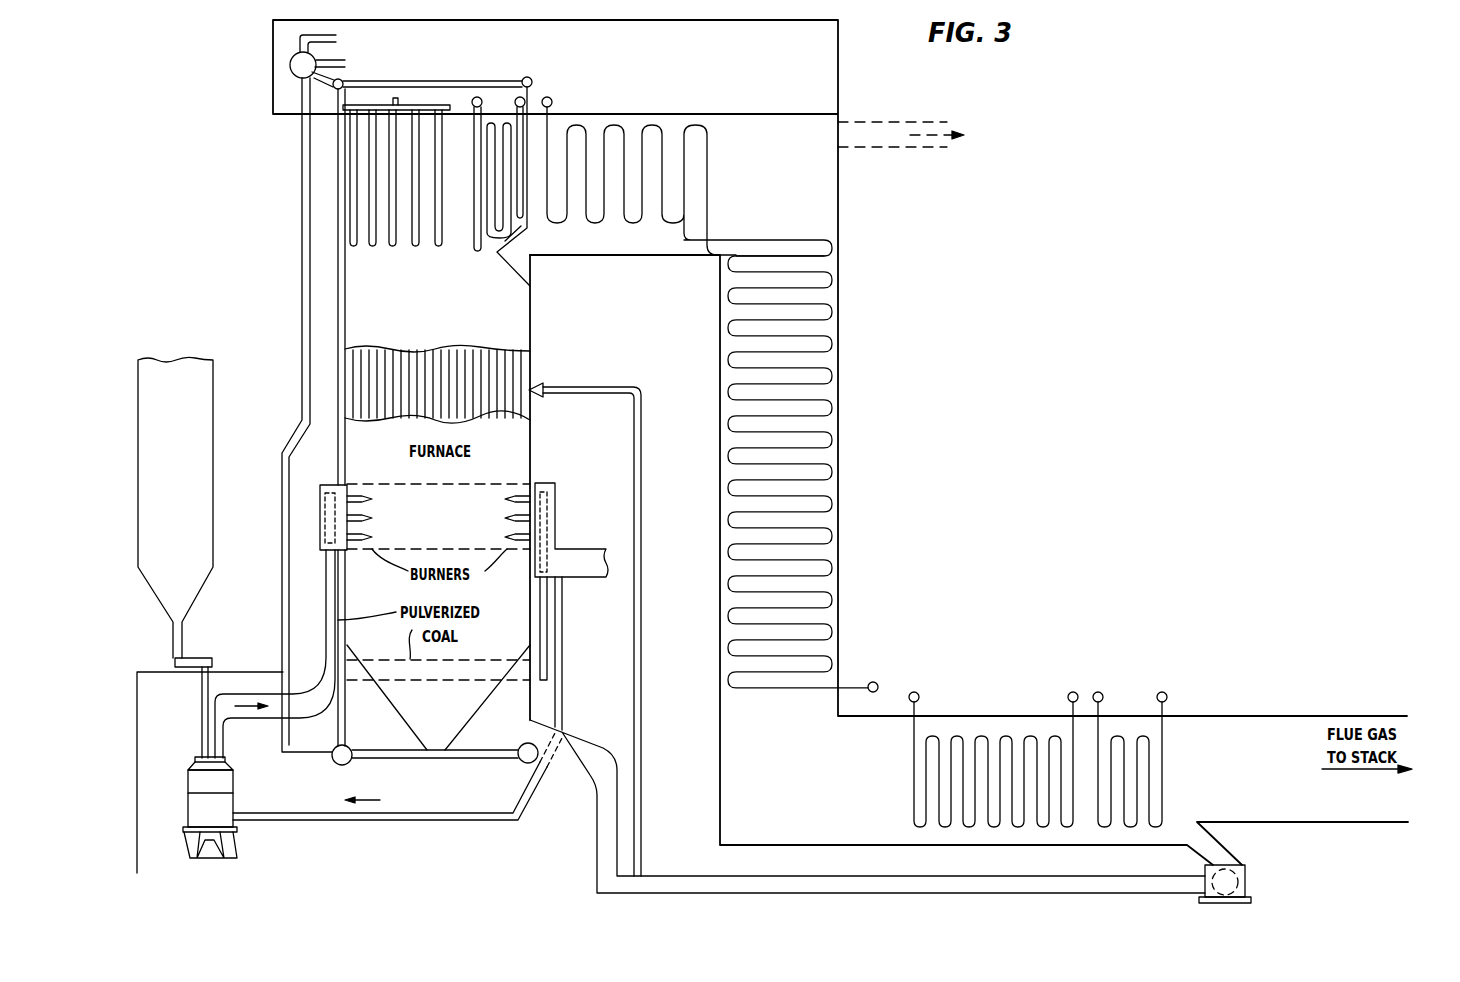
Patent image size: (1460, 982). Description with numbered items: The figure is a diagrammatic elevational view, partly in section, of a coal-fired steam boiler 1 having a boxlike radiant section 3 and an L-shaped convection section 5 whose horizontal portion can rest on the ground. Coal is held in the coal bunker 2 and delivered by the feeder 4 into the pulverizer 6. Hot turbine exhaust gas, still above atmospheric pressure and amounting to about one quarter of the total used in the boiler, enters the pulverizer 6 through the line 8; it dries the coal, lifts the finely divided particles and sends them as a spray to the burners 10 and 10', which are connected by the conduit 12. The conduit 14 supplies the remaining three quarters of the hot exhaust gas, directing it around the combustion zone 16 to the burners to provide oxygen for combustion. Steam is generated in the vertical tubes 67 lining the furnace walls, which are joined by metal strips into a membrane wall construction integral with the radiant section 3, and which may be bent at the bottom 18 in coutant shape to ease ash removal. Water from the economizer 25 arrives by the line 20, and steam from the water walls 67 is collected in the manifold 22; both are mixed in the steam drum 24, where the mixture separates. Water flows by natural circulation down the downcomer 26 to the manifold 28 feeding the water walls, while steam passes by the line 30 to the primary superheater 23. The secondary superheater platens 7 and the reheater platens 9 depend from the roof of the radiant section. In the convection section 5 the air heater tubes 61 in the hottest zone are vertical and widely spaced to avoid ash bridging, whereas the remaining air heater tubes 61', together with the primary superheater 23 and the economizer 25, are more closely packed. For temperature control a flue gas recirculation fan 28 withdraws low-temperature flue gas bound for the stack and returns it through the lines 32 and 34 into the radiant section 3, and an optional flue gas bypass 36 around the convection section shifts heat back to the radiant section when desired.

The steam generator / boiler system 1 is at (288, 368).
The coal bunker 2 is at (182, 461).
The radiant section 3 is at (338, 466).
The feeder 4 is at (195, 652).
The convection section 5 is at (841, 372).
The pulverizer 6 is at (190, 815).
The secondary superheater platens 7 is at (396, 140).
The line 8 is at (470, 813).
The reheater platens 9 is at (497, 123).
The burners 10 is at (376, 518).
The burners 10' is at (504, 518).
The conduit 12 is at (497, 660).
The conduit 14 is at (549, 484).
The combustion zone 16 is at (388, 485).
The bottom 18 is at (400, 722).
The line 20 is at (345, 62).
The manifold 22 is at (417, 93).
The primary superheater 23 is at (983, 731).
The steam drum 24 is at (288, 62).
The economizer 25 is at (1140, 730).
The downcomer 26 is at (286, 177).
The manifold / flue gas recirculation fan 28 is at (337, 763).
The line 30 is at (336, 38).
The line 32 is at (920, 876).
The line 34 is at (588, 387).
The flue gas bypass 36 is at (897, 122).
The air heater tubes 61 is at (687, 173).
The air heater tubes 61' is at (803, 474).
The vertical tubes 67 is at (434, 348).